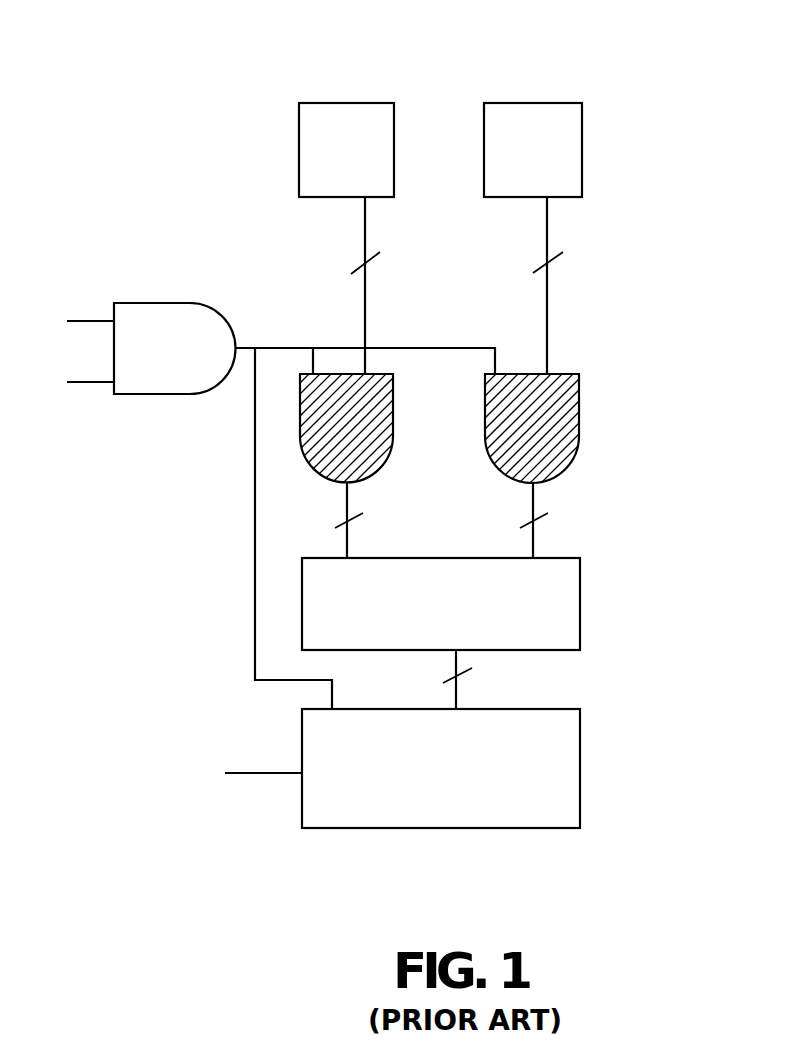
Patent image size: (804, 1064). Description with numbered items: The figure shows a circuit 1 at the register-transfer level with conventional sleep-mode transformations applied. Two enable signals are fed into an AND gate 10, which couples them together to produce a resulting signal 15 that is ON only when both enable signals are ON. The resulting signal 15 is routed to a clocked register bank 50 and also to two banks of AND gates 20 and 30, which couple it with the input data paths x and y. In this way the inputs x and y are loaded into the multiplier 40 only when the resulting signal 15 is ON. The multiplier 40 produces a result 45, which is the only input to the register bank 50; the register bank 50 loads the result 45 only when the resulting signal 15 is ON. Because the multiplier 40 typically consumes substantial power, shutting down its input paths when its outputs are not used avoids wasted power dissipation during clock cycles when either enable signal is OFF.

The circuit 1 is at (647, 72).
The AND gate 10 is at (150, 303).
The resulting signal 15 is at (277, 347).
The bank of AND gates 20 is at (393, 419).
The bank of AND gates 30 is at (579, 418).
The multiplier 40 is at (580, 578).
The result 45 is at (456, 700).
The register bank 50 is at (580, 780).